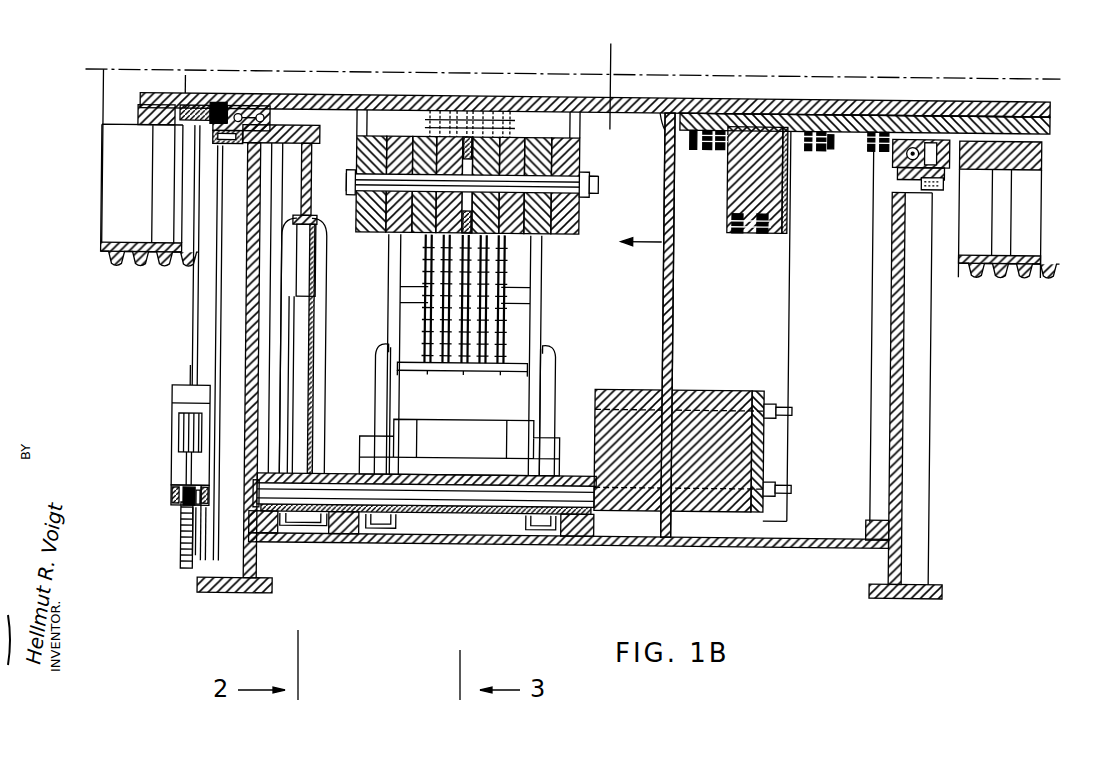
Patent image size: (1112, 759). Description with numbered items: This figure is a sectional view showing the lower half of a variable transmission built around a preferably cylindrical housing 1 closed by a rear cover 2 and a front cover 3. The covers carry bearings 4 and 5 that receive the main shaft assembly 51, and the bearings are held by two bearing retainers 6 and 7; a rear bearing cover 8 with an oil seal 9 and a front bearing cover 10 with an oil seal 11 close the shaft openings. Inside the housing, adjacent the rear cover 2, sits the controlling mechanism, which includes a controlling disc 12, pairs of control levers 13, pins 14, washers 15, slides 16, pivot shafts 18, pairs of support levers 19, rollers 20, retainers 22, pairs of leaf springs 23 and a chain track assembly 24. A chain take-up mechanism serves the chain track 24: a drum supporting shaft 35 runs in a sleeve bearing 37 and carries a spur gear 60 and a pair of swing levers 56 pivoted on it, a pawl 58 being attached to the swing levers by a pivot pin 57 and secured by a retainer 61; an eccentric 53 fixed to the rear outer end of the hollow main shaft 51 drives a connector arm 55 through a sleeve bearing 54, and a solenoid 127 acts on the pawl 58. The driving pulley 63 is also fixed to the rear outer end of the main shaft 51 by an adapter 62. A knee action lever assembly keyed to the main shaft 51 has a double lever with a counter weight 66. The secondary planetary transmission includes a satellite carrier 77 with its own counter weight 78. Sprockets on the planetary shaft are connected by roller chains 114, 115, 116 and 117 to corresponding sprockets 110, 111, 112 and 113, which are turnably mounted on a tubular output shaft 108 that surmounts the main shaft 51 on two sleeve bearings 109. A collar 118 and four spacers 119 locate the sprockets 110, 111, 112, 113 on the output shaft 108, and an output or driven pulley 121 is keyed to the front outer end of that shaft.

The housing 1 is at (790, 546).
The rear cover 2 is at (234, 597).
The front cover 3 is at (907, 438).
The bearing 4 is at (656, 243).
The bearing 5 is at (905, 134).
The bearing retainer 6 is at (236, 110).
The bearing retainer 7 is at (918, 138).
The rear bearing cover 8 is at (220, 148).
The oil seal 9 is at (226, 110).
The front bearing cover 10 is at (944, 181).
The oil seal 11 is at (928, 138).
The controlling disc 12 is at (312, 175).
The control levers 13 is at (300, 540).
The pins 14 is at (296, 226).
The washers 15 is at (305, 222).
The slides 16 is at (296, 258).
The pivot shafts 18 is at (262, 497).
The support levers 19 is at (385, 540).
The rollers 20 is at (485, 440).
The retainers 22 is at (258, 486).
The leaf springs 23 is at (388, 352).
The chain track assembly 24 is at (500, 285).
The drum supporting shaft 35 is at (186, 498).
The sleeve bearing 37 is at (216, 522).
The main shaft assembly 51 is at (185, 95).
The eccentric 53 is at (198, 110).
The sleeve bearing 54 is at (215, 106).
The connector arm 55 is at (197, 345).
The swing levers 56 is at (198, 525).
The pivot pin 57 is at (240, 478).
The pawl 58 is at (180, 492).
The spur gear 60 is at (186, 560).
The retainer 61 is at (199, 504).
The adapter 62 is at (137, 120).
The driving pulley 63 is at (104, 240).
The counter weight 66 is at (357, 238).
The satellite carrier 77 is at (665, 262).
The counter weight 78 is at (725, 390).
The tubular output shaft 108 is at (1050, 125).
The sleeve bearings 109 is at (698, 110).
The sprocket 110 is at (740, 234).
The sprocket 111 is at (693, 150).
The sprocket 112 is at (815, 150).
The sprocket 113 is at (833, 150).
The roller chain 114 is at (760, 234).
The roller chain 115 is at (710, 150).
The roller chain 116 is at (828, 152).
The roller chain 117 is at (875, 152).
The collar 118 is at (664, 140).
The spacers 119 is at (742, 126).
The output pulley 121 is at (1020, 276).
The solenoid 127 is at (175, 432).